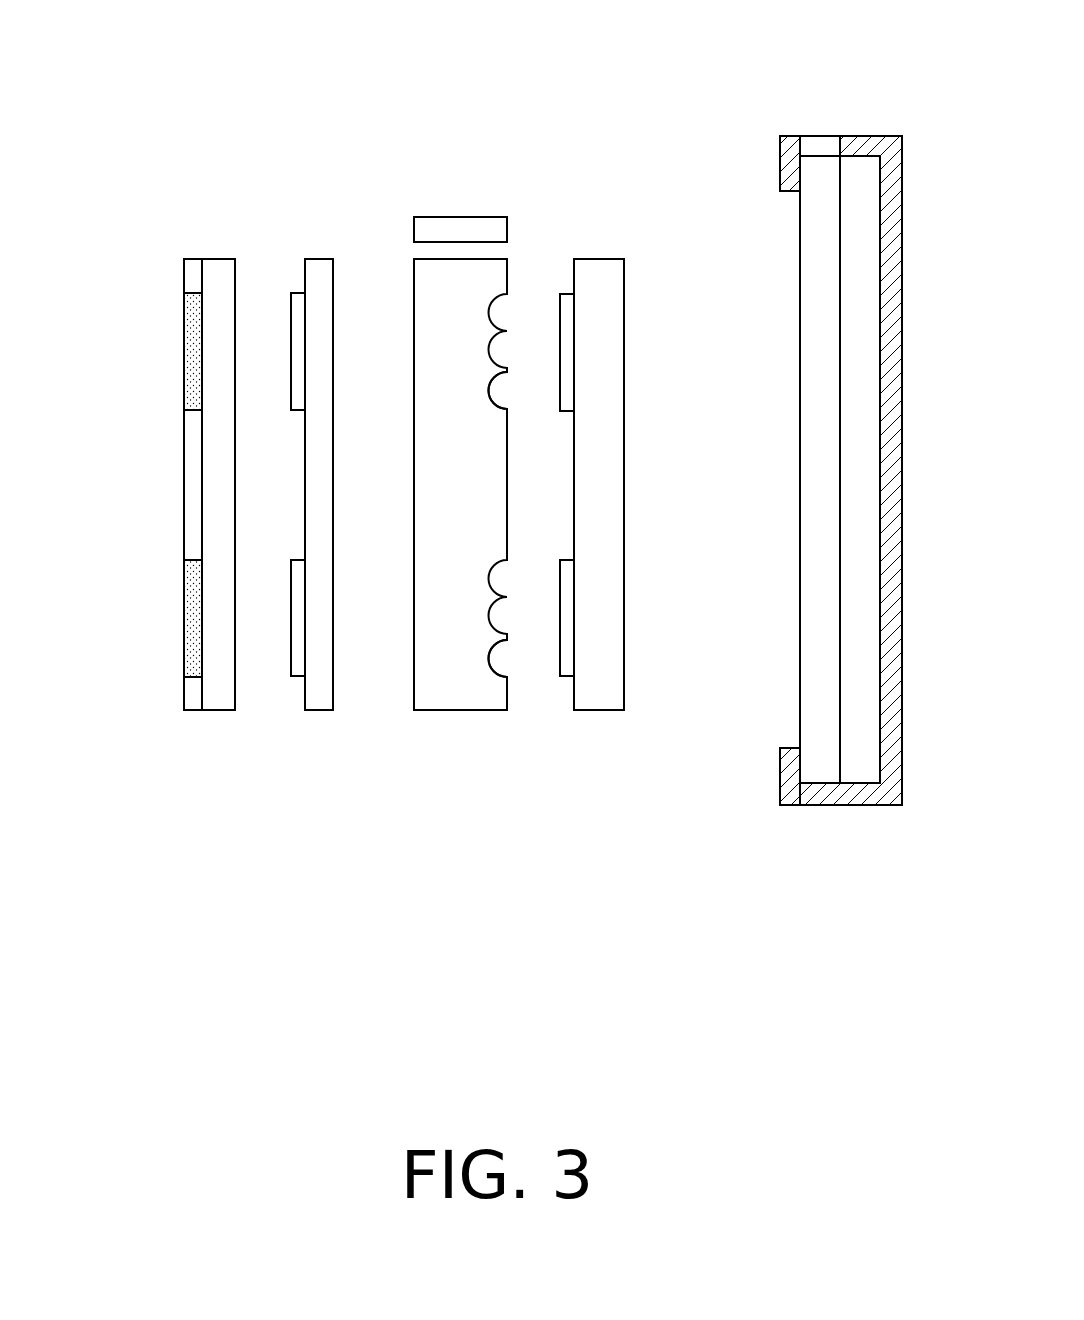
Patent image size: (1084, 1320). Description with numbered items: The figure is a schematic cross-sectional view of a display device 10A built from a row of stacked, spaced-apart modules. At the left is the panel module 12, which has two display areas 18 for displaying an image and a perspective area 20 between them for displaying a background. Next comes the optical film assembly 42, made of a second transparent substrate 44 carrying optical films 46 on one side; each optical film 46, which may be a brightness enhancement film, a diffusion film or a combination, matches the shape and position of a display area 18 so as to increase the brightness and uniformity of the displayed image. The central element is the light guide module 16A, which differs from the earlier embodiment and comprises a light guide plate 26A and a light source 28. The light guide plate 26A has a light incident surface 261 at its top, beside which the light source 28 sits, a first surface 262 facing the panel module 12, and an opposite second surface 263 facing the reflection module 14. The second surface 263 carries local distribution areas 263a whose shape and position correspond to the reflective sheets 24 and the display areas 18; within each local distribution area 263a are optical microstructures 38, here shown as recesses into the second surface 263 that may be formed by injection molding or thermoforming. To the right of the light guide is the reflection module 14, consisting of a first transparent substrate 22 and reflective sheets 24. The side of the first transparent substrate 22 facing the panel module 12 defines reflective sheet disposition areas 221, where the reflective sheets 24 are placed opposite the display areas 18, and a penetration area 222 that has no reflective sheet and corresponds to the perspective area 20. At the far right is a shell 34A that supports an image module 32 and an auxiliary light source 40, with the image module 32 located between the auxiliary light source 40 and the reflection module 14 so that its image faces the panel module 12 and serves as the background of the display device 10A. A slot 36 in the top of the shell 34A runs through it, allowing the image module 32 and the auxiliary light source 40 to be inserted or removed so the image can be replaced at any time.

The display device 10A is at (160, 110).
The panel module 12 is at (203, 735).
The reflection module 14 is at (600, 735).
The light guide module 16A is at (455, 735).
The display area 18 is at (189, 345).
The perspective area 20 is at (192, 487).
The first transparent substrate 22 is at (602, 257).
The reflective sheet 24 is at (568, 385).
The light guide plate 26A is at (463, 710).
The light source 28 is at (458, 227).
The image module 32 is at (813, 765).
The shell 34A is at (778, 167).
The slot 36 is at (825, 140).
The optical microstructures 38 is at (503, 397).
The auxiliary light source 40 is at (862, 765).
The optical film assembly 42 is at (308, 735).
The second transparent substrate 44 is at (320, 710).
The optical film 46 is at (296, 383).
The reflective sheet disposition area 221 is at (576, 325).
The penetration area 222 is at (576, 517).
The light incident surface 261 is at (425, 257).
The first surface 262 is at (407, 268).
The second surface 263 is at (518, 268).
The local distribution area 263a is at (508, 372).